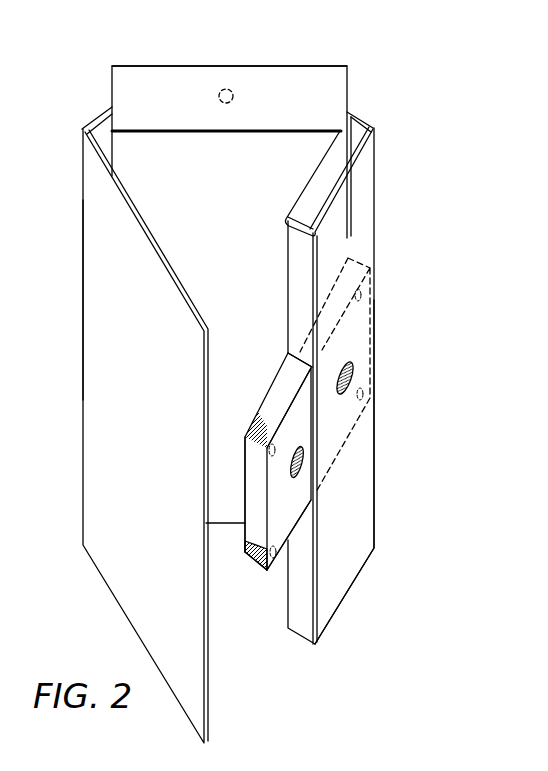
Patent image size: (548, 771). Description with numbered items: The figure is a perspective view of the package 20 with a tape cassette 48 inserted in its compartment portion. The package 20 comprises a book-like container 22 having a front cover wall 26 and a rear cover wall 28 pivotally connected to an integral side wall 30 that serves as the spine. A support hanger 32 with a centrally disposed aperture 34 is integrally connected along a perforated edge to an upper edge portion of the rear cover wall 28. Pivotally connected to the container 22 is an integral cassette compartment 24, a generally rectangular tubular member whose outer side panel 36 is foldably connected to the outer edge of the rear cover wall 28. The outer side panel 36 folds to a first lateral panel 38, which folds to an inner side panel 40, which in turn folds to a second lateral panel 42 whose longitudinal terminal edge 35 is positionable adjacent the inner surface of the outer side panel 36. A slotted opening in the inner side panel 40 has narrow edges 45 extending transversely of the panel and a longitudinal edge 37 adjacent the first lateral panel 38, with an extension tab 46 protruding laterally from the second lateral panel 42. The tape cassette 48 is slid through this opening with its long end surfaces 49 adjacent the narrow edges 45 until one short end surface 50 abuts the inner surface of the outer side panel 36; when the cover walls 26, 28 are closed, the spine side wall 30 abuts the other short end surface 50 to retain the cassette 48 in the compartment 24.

The package 20 is at (360, 78).
The book-like container 22 is at (82, 190).
The cassette compartment 24 is at (378, 156).
The front cover wall 26 is at (82, 275).
The rear cover wall 28 is at (224, 524).
The side wall 30 is at (110, 112).
The support hanger 32 is at (108, 82).
The aperture 34 is at (229, 85).
The longitudinal terminal edge 35 is at (340, 128).
The outer side panel 36 is at (361, 119).
The longitudinal edge 37 is at (316, 430).
The first lateral panel 38 is at (377, 470).
The inner side panel 40 is at (288, 260).
The second lateral panel 42 is at (309, 178).
The narrow edges 45 is at (304, 370).
The extension tab 46 is at (278, 370).
The tape cassette 48 is at (245, 496).
The long end surfaces 49 is at (262, 418).
The short end surface 50 is at (350, 257).